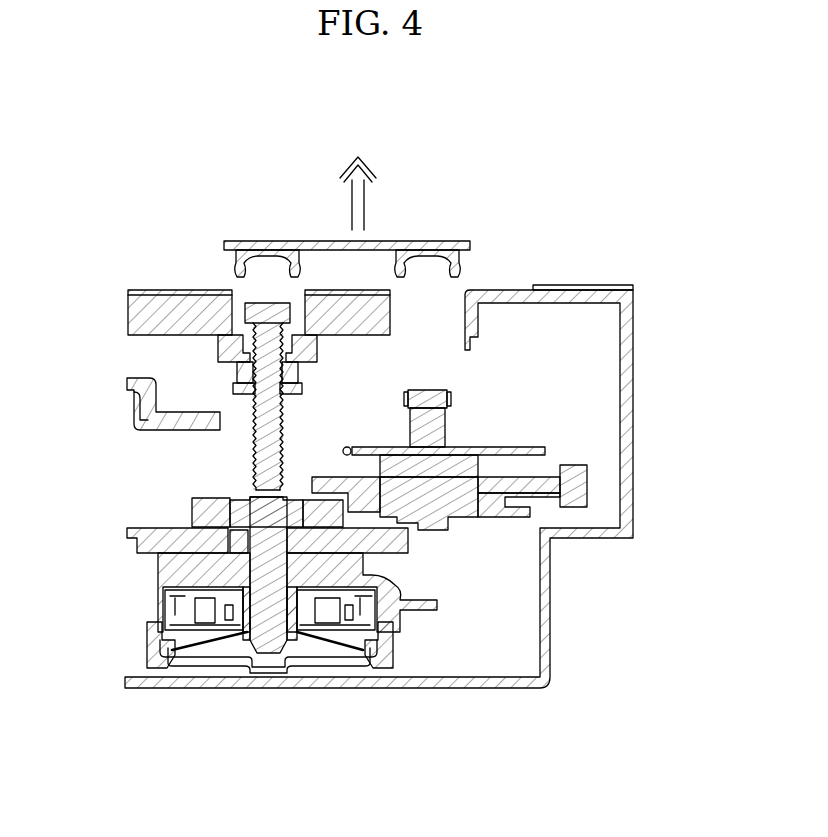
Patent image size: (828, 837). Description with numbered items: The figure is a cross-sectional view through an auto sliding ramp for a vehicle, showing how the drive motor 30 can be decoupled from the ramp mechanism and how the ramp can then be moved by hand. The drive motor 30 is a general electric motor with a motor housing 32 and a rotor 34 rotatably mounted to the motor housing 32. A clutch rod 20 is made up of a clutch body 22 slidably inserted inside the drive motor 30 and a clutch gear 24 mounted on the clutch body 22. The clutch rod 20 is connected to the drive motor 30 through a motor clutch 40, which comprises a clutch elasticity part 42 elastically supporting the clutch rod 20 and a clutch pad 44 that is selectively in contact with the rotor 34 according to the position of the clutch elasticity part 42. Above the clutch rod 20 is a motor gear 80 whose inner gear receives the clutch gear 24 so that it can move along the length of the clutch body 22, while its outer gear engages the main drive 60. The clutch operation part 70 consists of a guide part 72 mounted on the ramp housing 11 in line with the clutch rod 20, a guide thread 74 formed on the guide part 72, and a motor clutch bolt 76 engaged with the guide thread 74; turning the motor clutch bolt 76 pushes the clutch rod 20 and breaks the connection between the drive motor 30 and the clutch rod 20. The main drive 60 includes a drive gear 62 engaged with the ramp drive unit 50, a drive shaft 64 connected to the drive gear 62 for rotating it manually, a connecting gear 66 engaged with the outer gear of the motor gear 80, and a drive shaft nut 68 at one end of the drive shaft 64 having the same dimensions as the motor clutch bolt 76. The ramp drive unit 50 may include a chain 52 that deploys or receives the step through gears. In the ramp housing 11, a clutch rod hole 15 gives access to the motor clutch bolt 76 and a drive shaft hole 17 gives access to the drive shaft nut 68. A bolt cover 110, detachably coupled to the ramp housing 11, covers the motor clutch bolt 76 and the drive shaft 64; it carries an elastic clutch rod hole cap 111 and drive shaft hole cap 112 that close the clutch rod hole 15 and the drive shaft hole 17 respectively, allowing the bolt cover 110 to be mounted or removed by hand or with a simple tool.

The ramp housing 11 is at (158, 300).
The clutch rod hole 15 is at (233, 305).
The drive shaft hole 17 is at (466, 308).
The clutch rod 20 is at (262, 650).
The clutch body 22 is at (267, 644).
The clutch gear 24 is at (175, 655).
The drive motor 30 is at (136, 594).
The motor housing 32 is at (172, 571).
The rotor 34 is at (300, 633).
The motor clutch 40 is at (282, 708).
The clutch elasticity part 42 is at (314, 645).
The clutch pad 44 is at (348, 647).
The ramp drive unit 50 is at (398, 455).
The chain 52 is at (580, 488).
The main drive 60 is at (495, 496).
The drive gear 62 is at (321, 478).
The drive shaft 64 is at (440, 420).
The connecting gear 66 is at (545, 513).
The drive shaft nut 68 is at (450, 401).
The clutch operation part 70 is at (267, 384).
The guide part 72 is at (302, 388).
The guide thread 74 is at (298, 376).
The motor clutch bolt 76 is at (265, 302).
The motor gear 80 is at (165, 487).
The bolt cover 110 is at (460, 226).
The clutch rod hole cap 111 is at (303, 265).
The drive shaft hole cap 112 is at (415, 262).